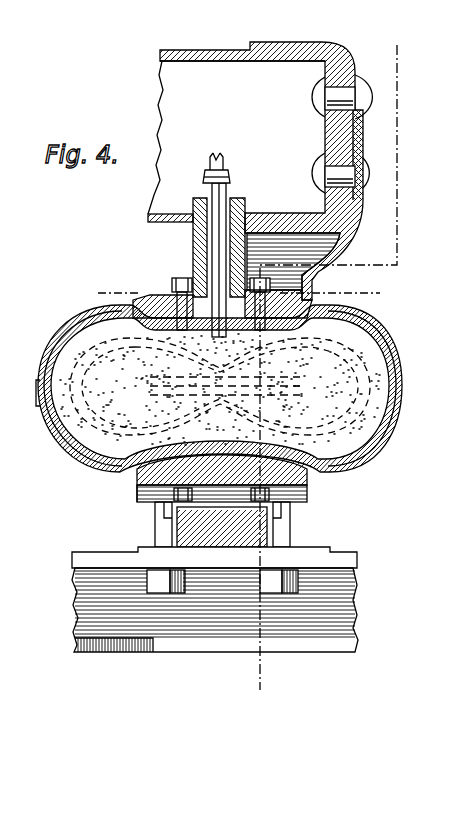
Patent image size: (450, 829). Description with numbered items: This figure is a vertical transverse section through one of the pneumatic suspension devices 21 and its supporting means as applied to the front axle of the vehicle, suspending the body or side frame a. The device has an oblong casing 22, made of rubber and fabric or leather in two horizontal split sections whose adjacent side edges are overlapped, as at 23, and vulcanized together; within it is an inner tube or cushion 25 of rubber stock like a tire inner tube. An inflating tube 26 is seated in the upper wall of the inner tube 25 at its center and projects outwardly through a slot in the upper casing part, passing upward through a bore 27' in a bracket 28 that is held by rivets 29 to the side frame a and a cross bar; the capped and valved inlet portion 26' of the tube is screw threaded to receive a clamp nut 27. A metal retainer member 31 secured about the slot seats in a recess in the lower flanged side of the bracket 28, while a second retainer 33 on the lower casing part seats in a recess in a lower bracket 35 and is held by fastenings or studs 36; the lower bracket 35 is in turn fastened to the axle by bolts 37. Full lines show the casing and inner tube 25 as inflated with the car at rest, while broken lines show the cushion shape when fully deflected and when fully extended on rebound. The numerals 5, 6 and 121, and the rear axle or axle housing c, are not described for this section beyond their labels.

The side frame a is at (323, 48).
The section line 5- 5 is at (413, 42).
The section line 6- 6 is at (241, 295).
The pneumatic suspension device 21 is at (142, 484).
The casing 22 is at (56, 347).
The overlapped side edges 23 is at (38, 393).
The inner tube 25 is at (331, 458).
The inflating tube 26 is at (192, 260).
The capped and valved inlet portion 26' is at (237, 161).
The clamp nut 27 is at (239, 187).
The bore 27' is at (175, 247).
The bracket 28 is at (275, 287).
The rivets 29 is at (356, 110).
The retainer member 31 is at (125, 309).
The second retainer 33 is at (138, 501).
The lower bracket 35 is at (157, 503).
The fastenings or studs 36 is at (173, 283).
The bolts 37 is at (158, 582).
The support block 121 is at (240, 533).
The rear axle or axle housing c is at (188, 642).